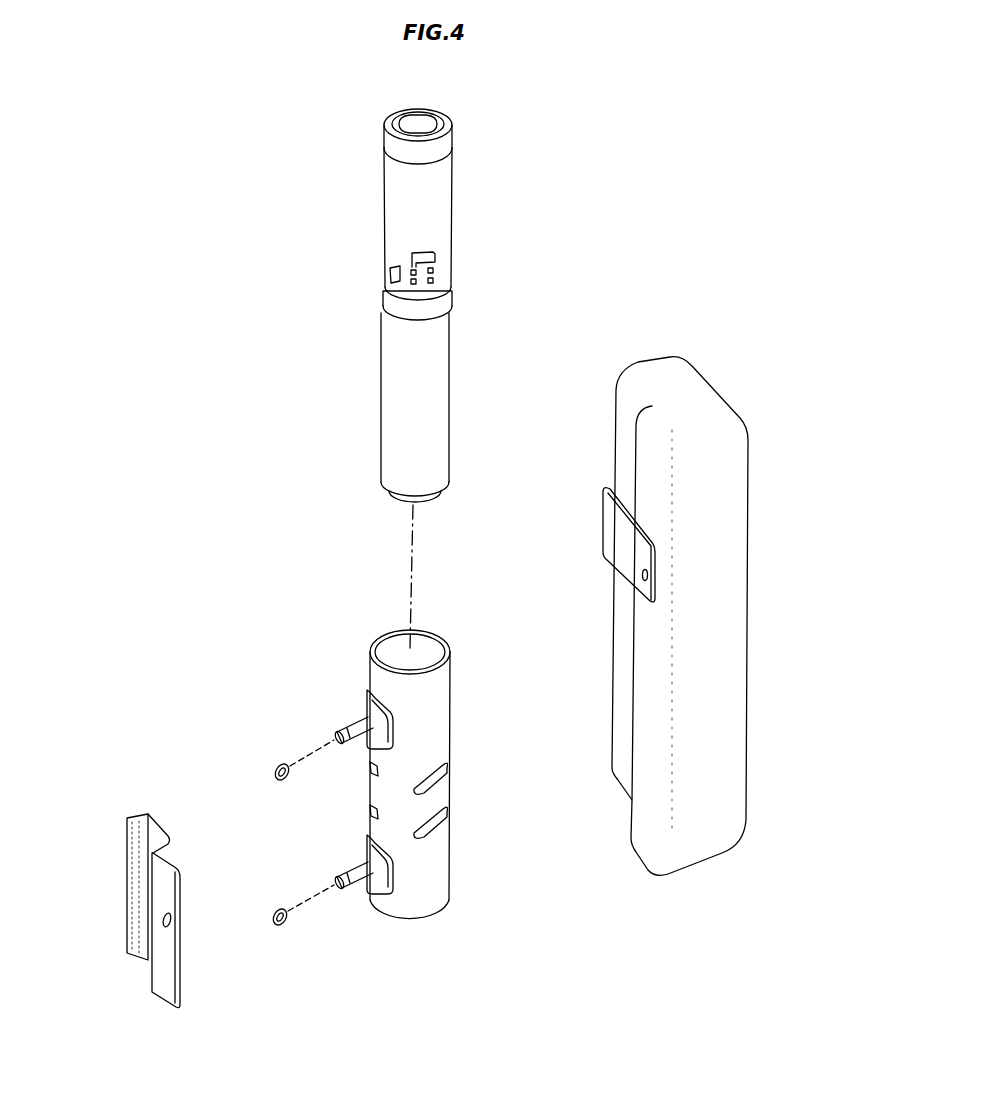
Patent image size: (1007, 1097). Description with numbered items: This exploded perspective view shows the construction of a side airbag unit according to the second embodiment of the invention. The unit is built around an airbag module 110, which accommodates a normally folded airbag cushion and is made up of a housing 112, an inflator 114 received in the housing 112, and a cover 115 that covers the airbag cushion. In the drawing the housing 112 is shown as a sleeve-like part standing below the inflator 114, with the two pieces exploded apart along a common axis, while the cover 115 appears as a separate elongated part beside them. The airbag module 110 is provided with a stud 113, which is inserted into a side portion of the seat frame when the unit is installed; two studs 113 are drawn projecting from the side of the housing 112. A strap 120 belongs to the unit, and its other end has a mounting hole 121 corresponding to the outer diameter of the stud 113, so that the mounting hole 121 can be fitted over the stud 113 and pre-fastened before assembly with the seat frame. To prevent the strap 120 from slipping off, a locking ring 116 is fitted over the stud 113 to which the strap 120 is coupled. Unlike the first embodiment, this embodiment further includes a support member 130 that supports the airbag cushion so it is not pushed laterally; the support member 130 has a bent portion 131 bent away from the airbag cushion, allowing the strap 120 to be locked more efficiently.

The airbag module 110 is at (682, 616).
The housing 112 is at (434, 867).
The stud 113 is at (353, 722).
The inflator 114 is at (388, 388).
The cover 115 is at (734, 598).
The locking ring 116 is at (280, 764).
The strap 120 is at (569, 566).
The mounting hole 121 is at (640, 574).
The support member 130 is at (115, 885).
The bent portion 131 is at (135, 810).